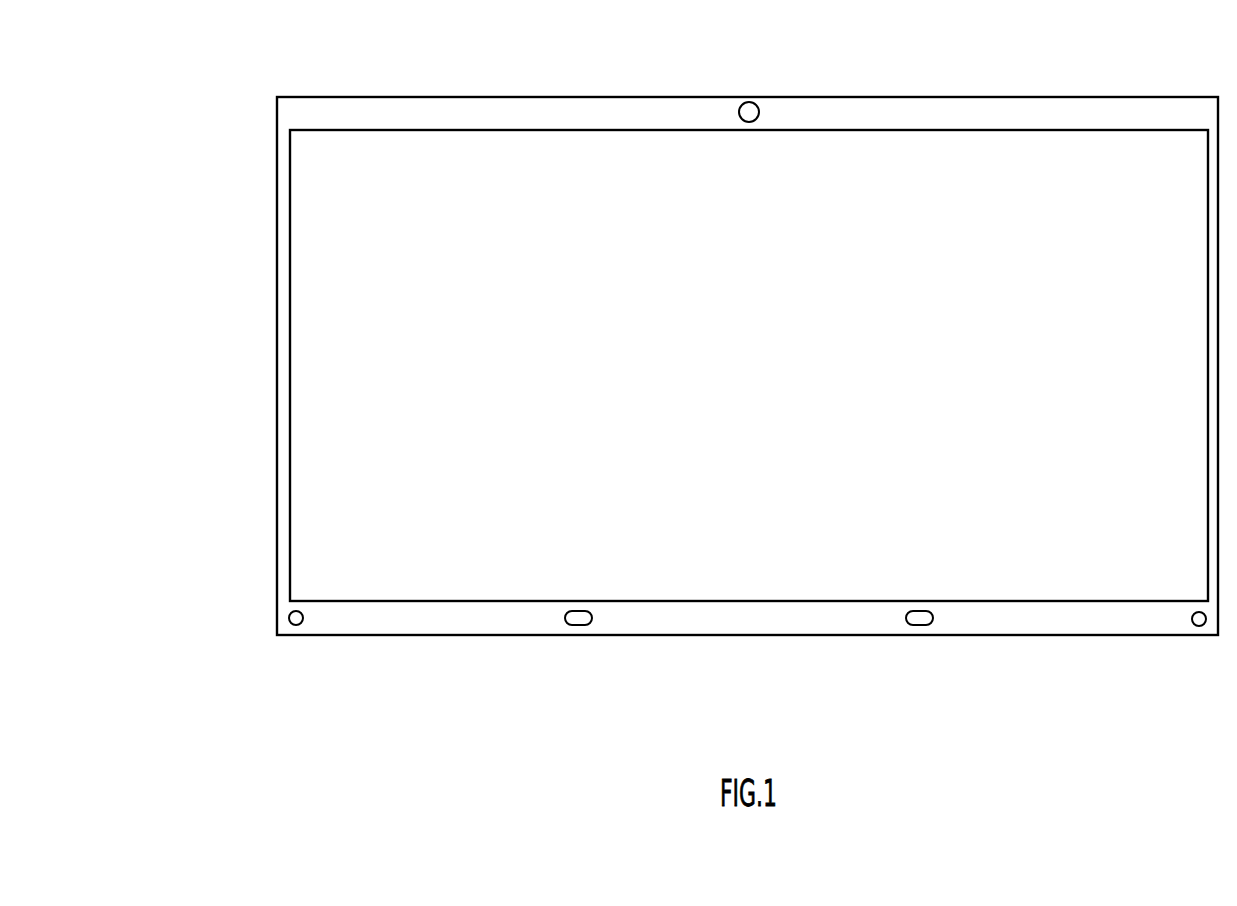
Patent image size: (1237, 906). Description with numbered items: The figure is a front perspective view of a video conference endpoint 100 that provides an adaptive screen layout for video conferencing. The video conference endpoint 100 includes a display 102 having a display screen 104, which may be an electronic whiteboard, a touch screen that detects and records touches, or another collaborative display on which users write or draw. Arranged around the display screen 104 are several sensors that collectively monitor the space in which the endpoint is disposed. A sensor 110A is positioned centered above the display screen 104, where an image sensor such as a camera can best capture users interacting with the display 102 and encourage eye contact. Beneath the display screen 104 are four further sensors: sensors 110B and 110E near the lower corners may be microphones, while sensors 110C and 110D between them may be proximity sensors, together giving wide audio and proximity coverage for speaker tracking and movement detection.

The video conference endpoint 100 is at (1093, 770).
The display 102 is at (262, 137).
The display screen 104 is at (578, 176).
The sensor 110A is at (738, 112).
The sensor 110B is at (296, 626).
The sensor 110C is at (577, 625).
The sensor 110D is at (918, 625).
The sensor 110E is at (1200, 626).